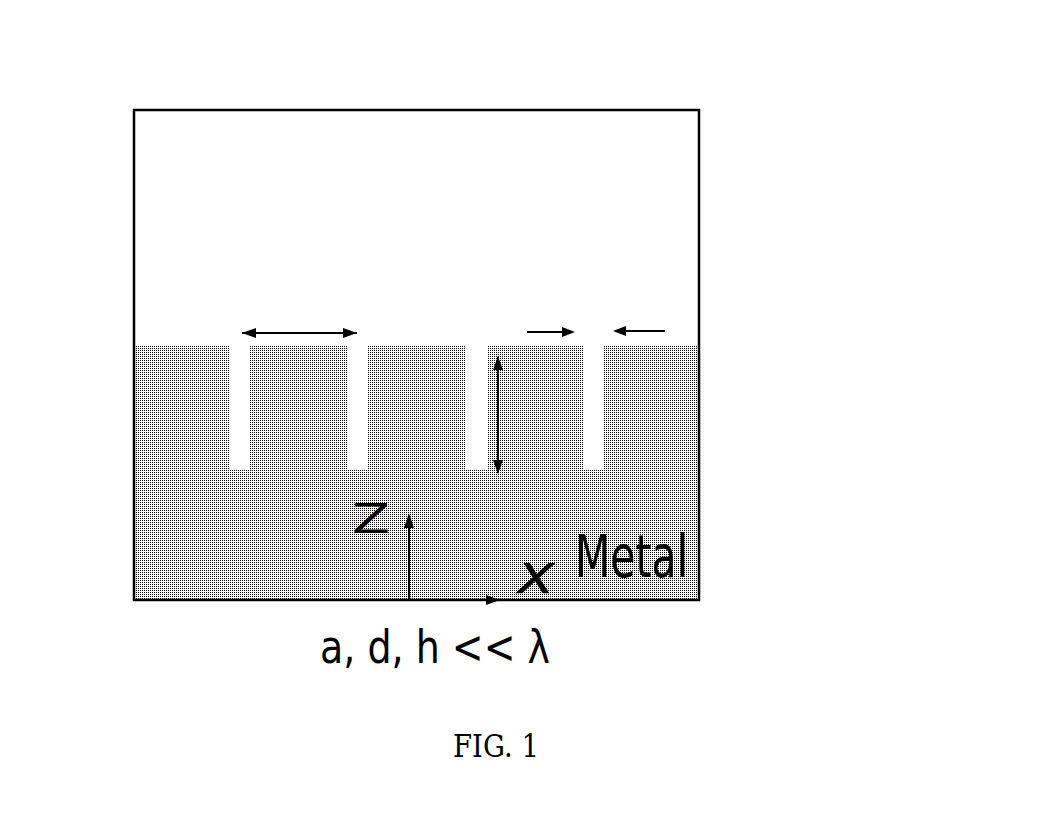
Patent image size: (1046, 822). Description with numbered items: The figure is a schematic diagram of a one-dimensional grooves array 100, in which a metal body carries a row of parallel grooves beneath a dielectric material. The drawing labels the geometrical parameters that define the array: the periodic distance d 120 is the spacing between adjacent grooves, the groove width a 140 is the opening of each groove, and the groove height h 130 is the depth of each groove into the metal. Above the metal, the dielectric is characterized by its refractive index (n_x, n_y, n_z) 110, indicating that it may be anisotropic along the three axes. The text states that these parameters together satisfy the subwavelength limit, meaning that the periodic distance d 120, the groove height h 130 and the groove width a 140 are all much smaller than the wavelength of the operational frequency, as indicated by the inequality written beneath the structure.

The one-dimensional grooves array 100 is at (248, 518).
The dielectric refractive index 110 is at (508, 222).
The periodic distance d 120 is at (295, 331).
The groove height h 130 is at (498, 405).
The groove width a 140 is at (648, 330).